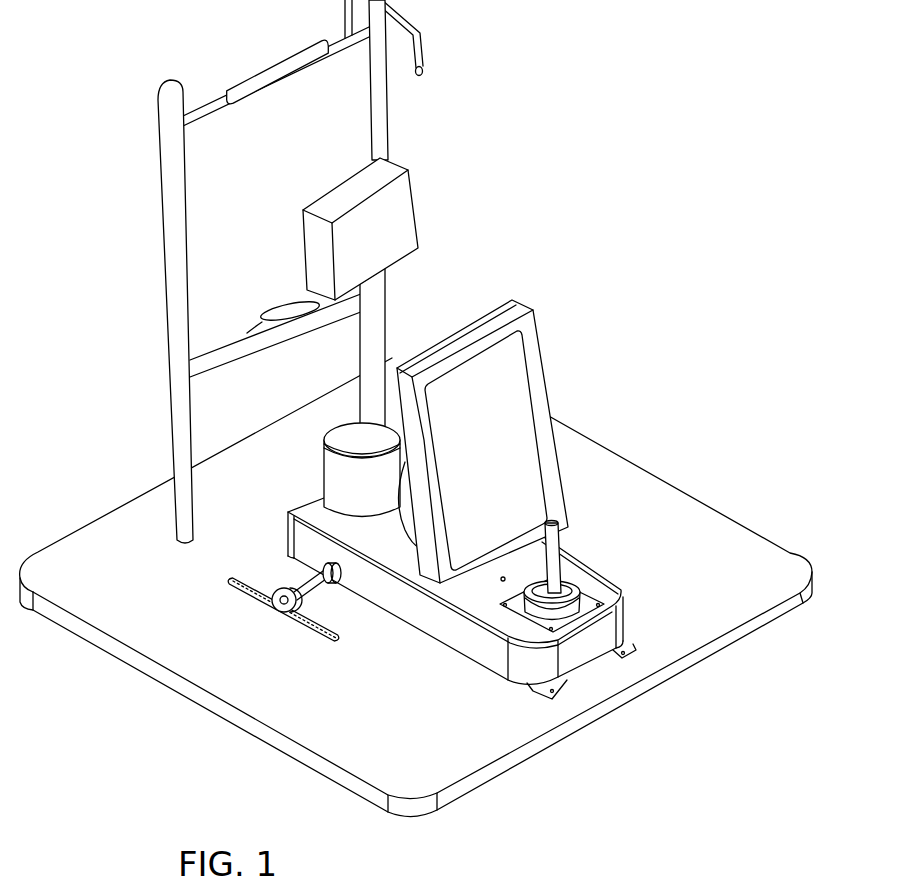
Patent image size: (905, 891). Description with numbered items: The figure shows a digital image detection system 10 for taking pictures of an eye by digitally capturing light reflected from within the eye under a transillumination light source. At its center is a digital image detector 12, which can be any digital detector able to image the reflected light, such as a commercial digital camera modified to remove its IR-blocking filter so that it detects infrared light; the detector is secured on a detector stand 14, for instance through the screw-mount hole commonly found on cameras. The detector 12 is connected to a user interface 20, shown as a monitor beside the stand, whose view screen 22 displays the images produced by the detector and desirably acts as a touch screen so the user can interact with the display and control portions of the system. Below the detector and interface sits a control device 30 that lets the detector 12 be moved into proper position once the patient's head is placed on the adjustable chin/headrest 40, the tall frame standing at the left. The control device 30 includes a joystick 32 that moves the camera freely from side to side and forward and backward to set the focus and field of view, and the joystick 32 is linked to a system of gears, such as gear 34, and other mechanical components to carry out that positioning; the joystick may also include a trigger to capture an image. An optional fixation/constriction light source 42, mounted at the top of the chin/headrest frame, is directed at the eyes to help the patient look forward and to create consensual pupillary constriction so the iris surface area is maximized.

The digital image detection system 10 is at (585, 197).
The digital image detector 12 is at (405, 207).
The detector stand 14 is at (376, 328).
The user interface 20 is at (552, 383).
The view screen 22 is at (505, 390).
The control device 30 is at (585, 562).
The joystick 32 is at (552, 545).
The gear 34 is at (280, 585).
The adjustable chin/headrest 40 is at (168, 289).
The fixation/constriction light source 42 is at (425, 43).